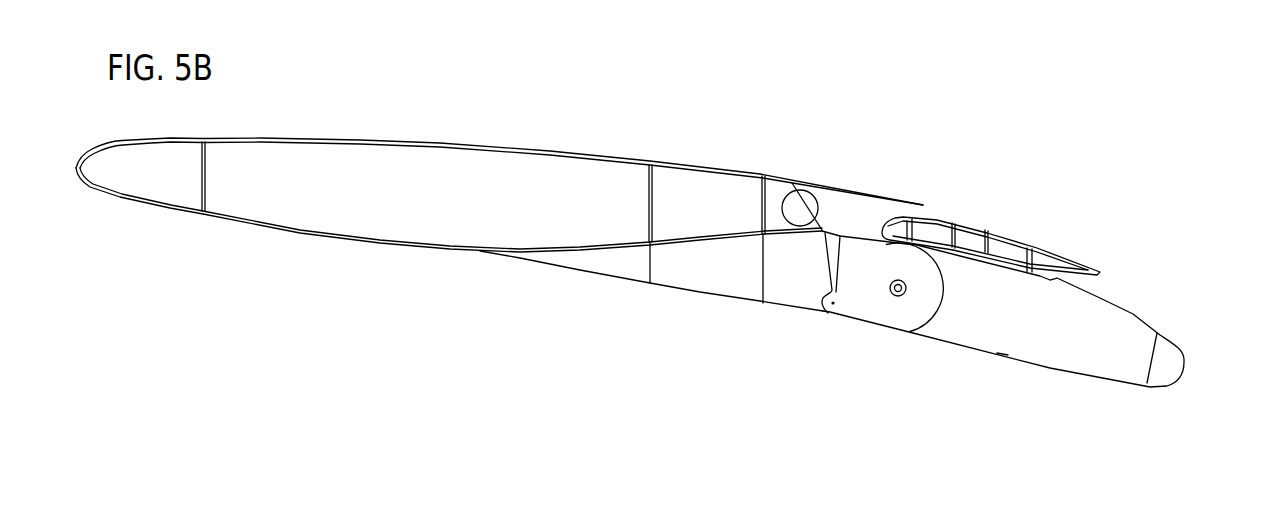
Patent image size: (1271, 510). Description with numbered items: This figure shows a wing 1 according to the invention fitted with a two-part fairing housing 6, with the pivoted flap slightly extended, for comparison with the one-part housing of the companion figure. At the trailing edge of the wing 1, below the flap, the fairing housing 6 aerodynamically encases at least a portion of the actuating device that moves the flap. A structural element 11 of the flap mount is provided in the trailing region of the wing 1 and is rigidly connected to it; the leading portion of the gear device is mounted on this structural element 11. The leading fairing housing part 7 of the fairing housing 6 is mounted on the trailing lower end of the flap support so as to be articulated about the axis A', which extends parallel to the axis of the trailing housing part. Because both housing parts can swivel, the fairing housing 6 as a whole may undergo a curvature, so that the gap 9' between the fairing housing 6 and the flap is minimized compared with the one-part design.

The wing 1 is at (406, 126).
The structural element 11 is at (712, 297).
The axis A' is at (808, 304).
The leading fairing housing part 7 is at (882, 310).
The fairing housing 6 is at (1144, 311).
The gap 9' is at (991, 225).